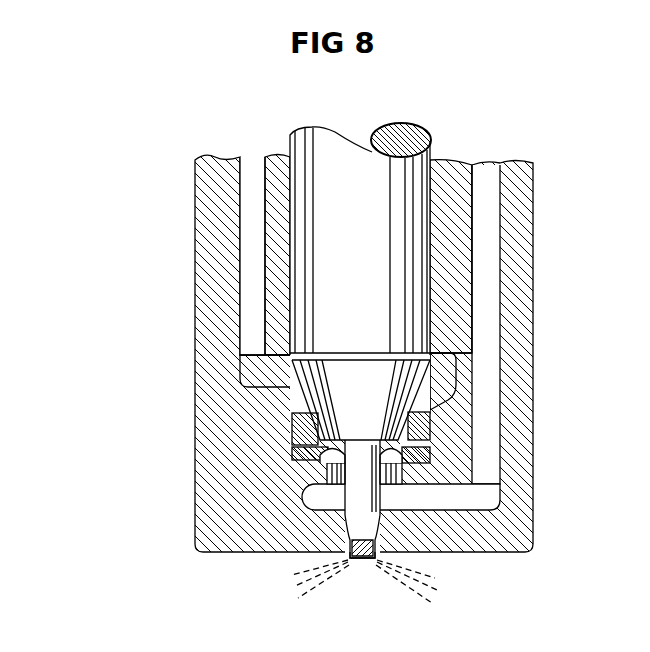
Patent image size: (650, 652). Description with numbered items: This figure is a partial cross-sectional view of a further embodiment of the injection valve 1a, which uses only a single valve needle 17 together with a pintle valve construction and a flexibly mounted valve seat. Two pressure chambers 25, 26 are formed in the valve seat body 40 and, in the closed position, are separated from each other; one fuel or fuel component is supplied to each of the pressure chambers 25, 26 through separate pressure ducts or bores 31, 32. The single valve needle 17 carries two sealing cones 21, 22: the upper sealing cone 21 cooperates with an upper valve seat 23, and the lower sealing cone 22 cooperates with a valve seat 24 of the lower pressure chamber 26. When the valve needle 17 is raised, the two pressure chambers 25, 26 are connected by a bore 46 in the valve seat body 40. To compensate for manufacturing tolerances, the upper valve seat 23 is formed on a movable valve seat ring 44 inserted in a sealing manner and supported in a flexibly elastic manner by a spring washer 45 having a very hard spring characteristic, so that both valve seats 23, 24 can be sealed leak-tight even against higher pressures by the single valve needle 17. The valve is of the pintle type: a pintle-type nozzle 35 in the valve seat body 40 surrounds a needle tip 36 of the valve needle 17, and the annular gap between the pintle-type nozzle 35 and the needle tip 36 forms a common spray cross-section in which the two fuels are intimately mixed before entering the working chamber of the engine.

The injection valve 1a is at (167, 255).
The valve needle 17 is at (342, 148).
The sealing cone 21 is at (320, 428).
The sealing cone 22 is at (372, 510).
The valve seat 23 is at (428, 447).
The valve seat 24 is at (380, 526).
The pressure chamber 25 is at (246, 368).
The pressure chamber 26 is at (316, 502).
The pressure duct 31 is at (252, 178).
The pressure duct 32 is at (487, 178).
The pintle-type nozzle 35 is at (345, 536).
The needle tip 36 is at (362, 560).
The valve seat body 40 is at (222, 497).
The movable valve seat ring 44 is at (430, 418).
The spring washer 45 is at (430, 485).
The bore 46 is at (325, 476).